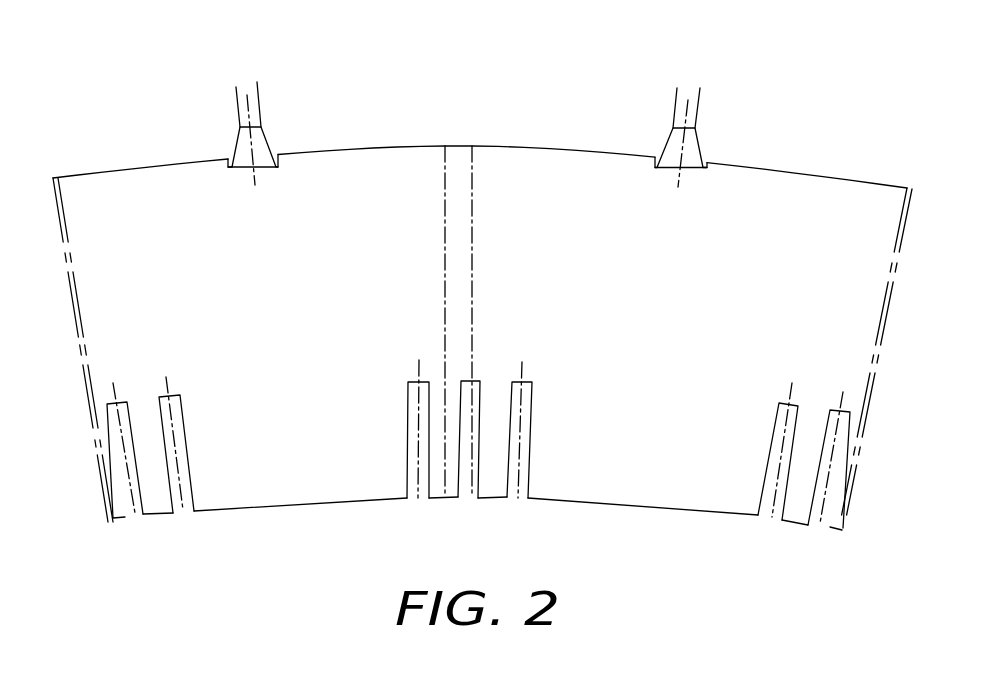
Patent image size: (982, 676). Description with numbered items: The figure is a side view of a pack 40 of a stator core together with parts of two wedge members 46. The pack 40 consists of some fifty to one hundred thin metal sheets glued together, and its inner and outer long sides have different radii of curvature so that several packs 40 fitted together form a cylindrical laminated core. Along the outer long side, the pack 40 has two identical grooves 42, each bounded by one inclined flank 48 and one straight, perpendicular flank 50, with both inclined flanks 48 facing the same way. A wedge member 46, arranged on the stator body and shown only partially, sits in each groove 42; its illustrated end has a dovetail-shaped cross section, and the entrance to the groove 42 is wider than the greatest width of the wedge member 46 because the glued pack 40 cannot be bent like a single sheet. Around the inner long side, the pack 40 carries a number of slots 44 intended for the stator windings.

The pack 40 is at (845, 175).
The groove 42 is at (267, 170).
The slot 44 is at (532, 410).
The wedge member 46 is at (262, 110).
The inclined flank 48 is at (232, 165).
The straight, perpendicular flank 50 is at (282, 162).